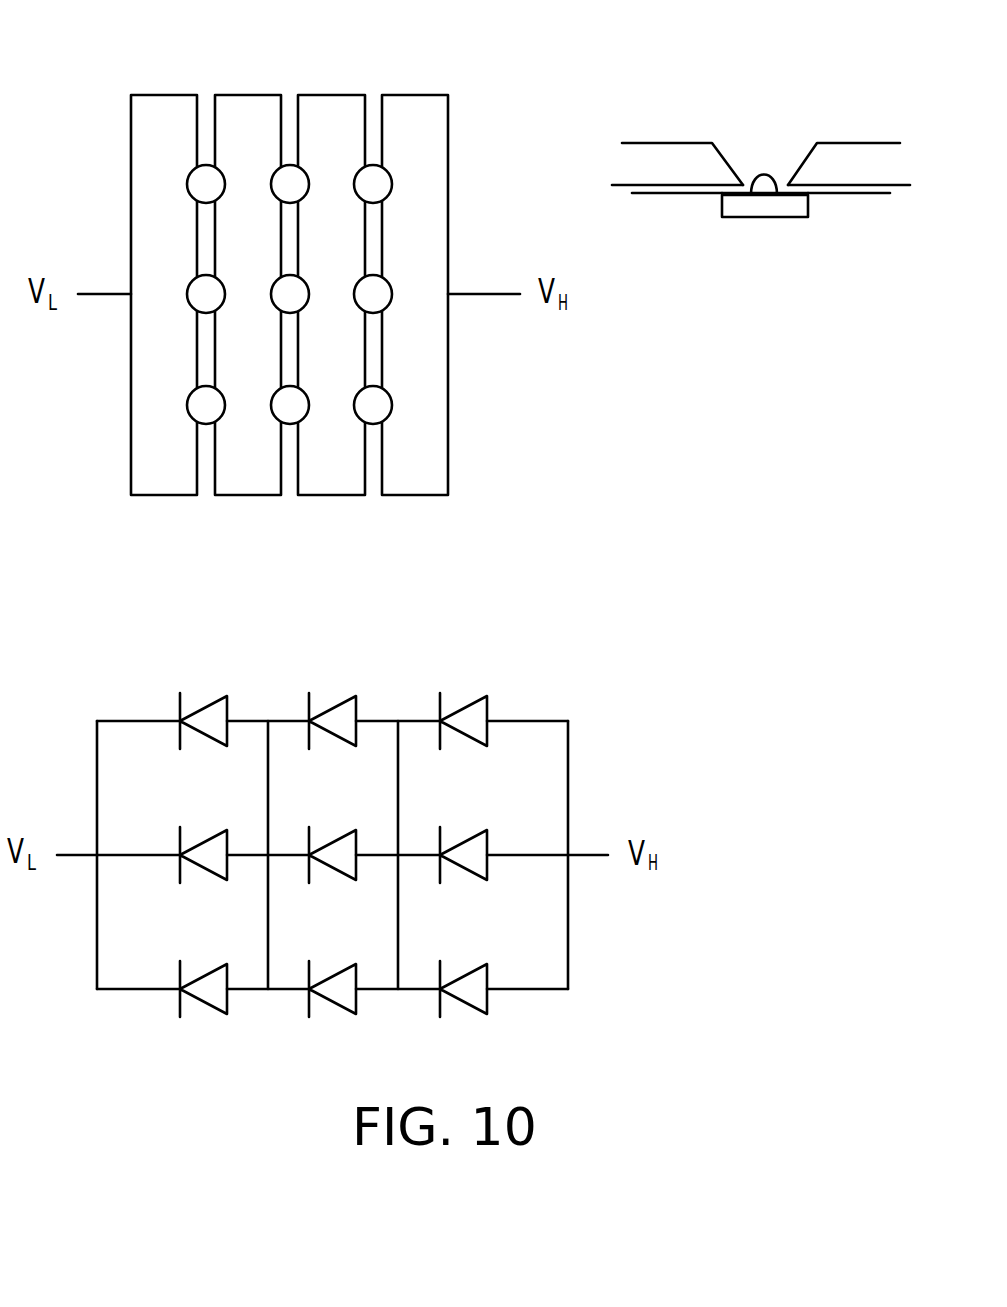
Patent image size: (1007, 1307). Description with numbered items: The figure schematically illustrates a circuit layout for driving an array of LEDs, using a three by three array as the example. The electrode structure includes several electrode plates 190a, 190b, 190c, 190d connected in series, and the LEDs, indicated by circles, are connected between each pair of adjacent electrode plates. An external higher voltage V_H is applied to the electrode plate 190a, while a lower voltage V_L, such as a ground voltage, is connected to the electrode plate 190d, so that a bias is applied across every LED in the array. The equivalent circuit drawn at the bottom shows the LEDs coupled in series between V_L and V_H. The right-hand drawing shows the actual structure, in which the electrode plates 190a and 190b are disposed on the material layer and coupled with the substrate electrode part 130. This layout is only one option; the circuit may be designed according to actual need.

The electrode plate 190a is at (417, 122).
The electrode plate 190b is at (332, 120).
The electrode plate 190c is at (248, 123).
The electrode plate 190d is at (160, 118).
The substrate electrode part 130 is at (768, 210).